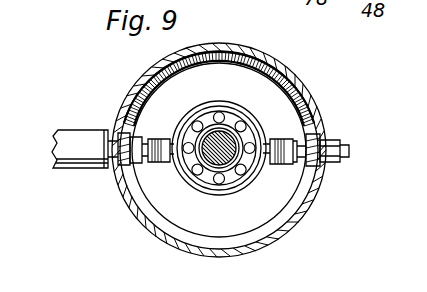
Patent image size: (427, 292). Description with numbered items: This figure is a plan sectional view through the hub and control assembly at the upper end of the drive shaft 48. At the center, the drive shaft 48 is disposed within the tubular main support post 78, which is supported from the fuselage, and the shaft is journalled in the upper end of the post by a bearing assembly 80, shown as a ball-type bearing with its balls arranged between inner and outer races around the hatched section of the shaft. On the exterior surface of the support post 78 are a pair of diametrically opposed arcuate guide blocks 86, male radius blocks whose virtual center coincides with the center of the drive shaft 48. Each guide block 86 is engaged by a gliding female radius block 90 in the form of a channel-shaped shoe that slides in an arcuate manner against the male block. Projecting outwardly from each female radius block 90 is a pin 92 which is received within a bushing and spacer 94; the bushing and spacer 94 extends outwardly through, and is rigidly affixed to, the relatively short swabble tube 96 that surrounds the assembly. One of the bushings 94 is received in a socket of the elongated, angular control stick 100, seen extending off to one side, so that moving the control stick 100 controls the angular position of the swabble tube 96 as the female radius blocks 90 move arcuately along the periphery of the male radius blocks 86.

The drive shaft 48 is at (228, 138).
The tubular main support post 78 is at (230, 100).
The bearing assembly 80 is at (243, 167).
The arcuate guide blocks 86 is at (163, 167).
The female radius block 90 is at (126, 184).
The pin 92 is at (349, 151).
The bushing and spacer 94 is at (331, 142).
The swabble tube 96 is at (315, 108).
The control stick 100 is at (72, 169).